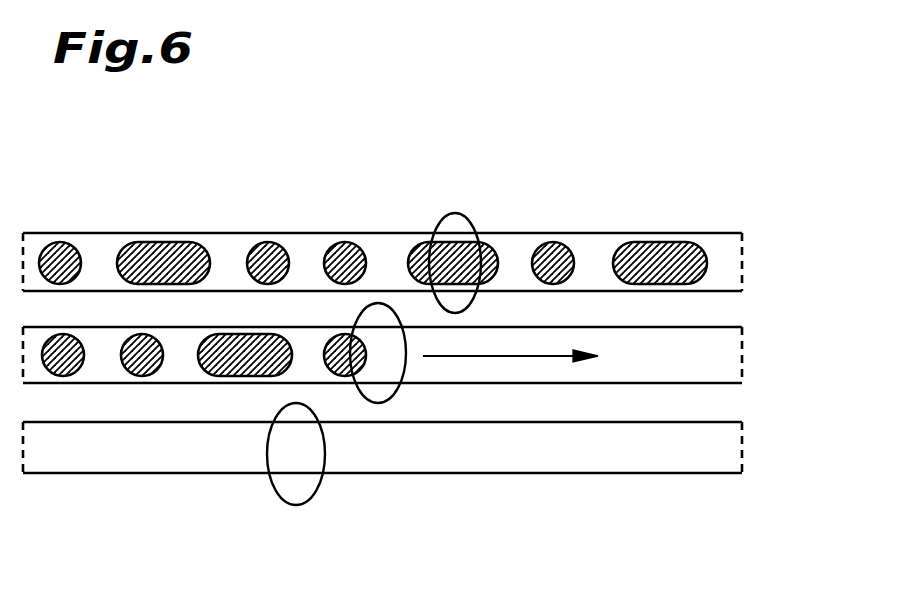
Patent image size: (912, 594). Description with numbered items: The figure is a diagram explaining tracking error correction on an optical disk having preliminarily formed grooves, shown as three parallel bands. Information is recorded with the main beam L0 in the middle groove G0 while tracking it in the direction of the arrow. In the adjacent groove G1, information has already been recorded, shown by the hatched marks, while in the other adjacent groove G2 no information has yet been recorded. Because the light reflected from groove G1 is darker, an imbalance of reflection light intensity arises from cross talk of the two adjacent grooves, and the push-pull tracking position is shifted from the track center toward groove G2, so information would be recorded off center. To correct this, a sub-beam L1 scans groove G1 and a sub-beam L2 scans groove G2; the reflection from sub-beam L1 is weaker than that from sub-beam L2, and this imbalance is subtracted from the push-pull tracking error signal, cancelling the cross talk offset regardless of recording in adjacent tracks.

The adjacent groove G1 is at (735, 264).
The groove G0 is at (735, 364).
The adjacent groove G2 is at (735, 462).
The sub-beam L1 is at (467, 214).
The main beam L0 is at (383, 400).
The sub-beam L2 is at (312, 490).